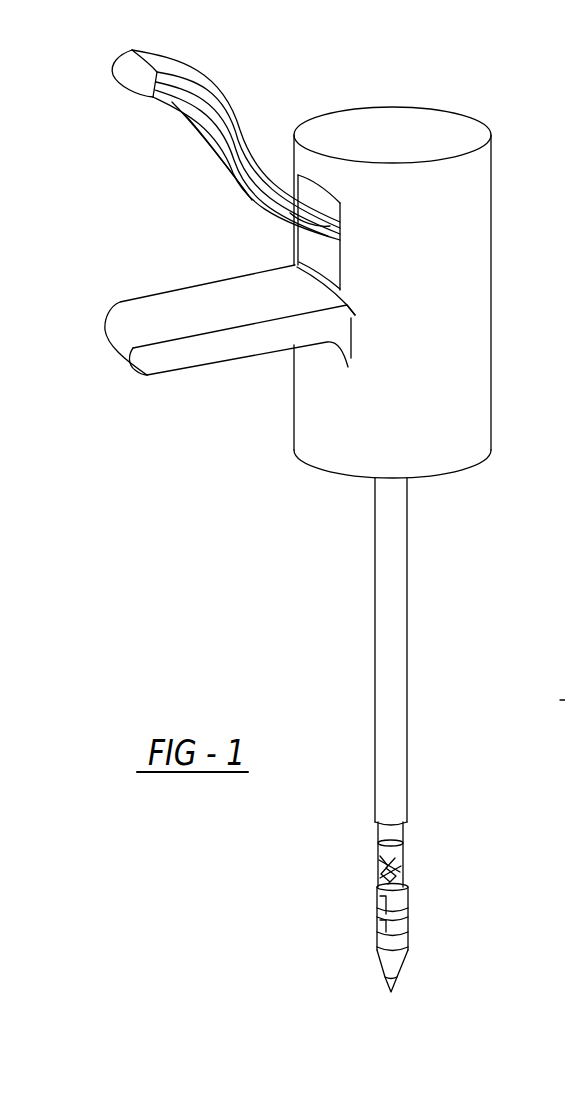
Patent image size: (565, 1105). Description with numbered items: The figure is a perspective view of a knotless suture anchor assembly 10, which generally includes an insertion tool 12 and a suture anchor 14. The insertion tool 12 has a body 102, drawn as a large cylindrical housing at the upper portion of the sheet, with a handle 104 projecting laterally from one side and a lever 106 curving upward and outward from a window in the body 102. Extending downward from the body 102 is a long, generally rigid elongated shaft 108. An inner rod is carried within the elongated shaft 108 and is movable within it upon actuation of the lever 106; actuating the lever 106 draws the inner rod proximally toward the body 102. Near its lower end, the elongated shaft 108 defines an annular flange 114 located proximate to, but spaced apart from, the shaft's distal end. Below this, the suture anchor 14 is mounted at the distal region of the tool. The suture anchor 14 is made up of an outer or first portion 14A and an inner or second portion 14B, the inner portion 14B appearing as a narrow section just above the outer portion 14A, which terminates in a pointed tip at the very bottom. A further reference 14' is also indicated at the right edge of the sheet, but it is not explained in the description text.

The knotless suture anchor assembly 10 is at (78, 93).
The body 102 is at (427, 128).
The handle 104 is at (176, 305).
The lever 106 is at (217, 82).
The insertion tool 12 is at (257, 543).
The elongated shaft 108 is at (383, 568).
The suture anchor 14 is at (386, 902).
The annular flange 114 is at (380, 830).
The inner or second portion 14B is at (398, 855).
The outer or first portion 14A is at (398, 940).
The alternative tip 14' is at (549, 724).